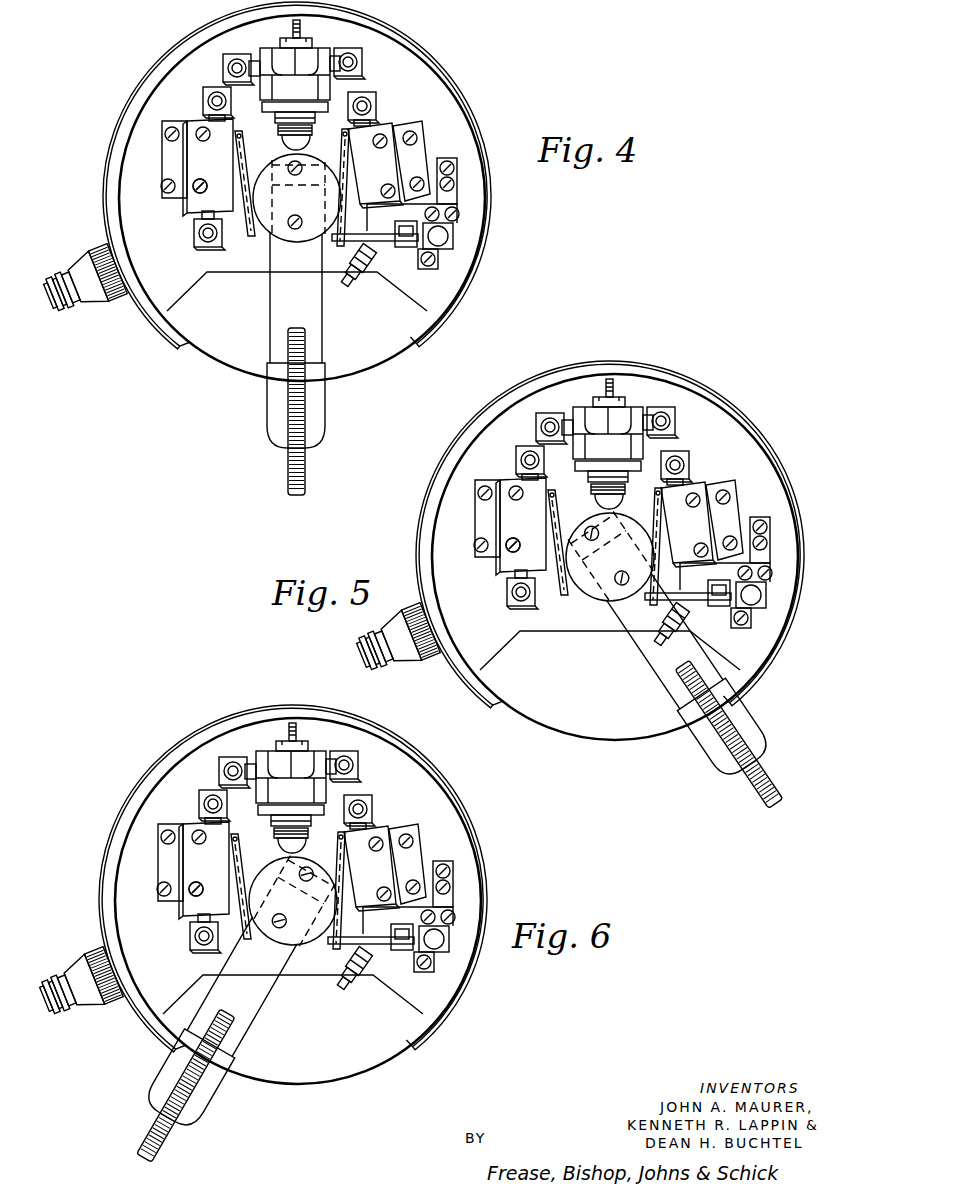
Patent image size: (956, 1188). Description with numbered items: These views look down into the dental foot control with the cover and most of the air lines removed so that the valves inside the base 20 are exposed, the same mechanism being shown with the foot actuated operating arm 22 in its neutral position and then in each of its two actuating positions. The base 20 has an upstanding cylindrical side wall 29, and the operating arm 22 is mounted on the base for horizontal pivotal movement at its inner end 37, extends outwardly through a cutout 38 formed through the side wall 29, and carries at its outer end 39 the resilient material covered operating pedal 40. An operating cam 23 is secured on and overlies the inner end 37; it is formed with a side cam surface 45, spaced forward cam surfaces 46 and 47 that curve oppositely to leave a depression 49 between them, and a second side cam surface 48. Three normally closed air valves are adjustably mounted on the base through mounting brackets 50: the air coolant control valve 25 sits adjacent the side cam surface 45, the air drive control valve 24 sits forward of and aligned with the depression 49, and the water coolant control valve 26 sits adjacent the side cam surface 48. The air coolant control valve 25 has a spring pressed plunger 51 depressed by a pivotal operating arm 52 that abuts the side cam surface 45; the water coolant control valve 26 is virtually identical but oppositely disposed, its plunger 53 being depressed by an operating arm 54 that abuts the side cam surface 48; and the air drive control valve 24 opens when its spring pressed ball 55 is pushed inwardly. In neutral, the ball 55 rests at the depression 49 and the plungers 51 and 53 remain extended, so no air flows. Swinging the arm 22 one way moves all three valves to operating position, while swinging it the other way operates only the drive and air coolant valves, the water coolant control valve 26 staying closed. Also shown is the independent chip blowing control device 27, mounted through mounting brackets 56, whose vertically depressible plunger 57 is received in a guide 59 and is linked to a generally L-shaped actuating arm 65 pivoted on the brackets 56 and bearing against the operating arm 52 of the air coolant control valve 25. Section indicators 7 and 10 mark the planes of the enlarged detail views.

In FIG. 4, the section line 7- 7 is at (160, 252).
In FIG. 4, the section line 10- 10 is at (280, 10).
In FIG. 4, the base 20 is at (108, 118).
In FIG. 5, the base 20 is at (727, 392).
In FIG. 6, the base 20 is at (150, 762).
In FIG. 4, the operating arm 22 is at (268, 350).
In FIG. 5, the operating arm 22 is at (657, 700).
In FIG. 6, the operating arm 22 is at (265, 1012).
In FIG. 4, the operating cam 23 is at (262, 230).
In FIG. 5, the operating cam 23 is at (588, 600).
In FIG. 6, the operating cam 23 is at (303, 950).
In FIG. 4, the air drive control valve 24 is at (262, 50).
In FIG. 5, the air drive control valve 24 is at (640, 400).
In FIG. 6, the air drive control valve 24 is at (262, 752).
In FIG. 4, the air coolant control valve 25 is at (390, 122).
In FIG. 5, the air coolant control valve 25 is at (700, 475).
In FIG. 6, the air coolant control valve 25 is at (385, 822).
In FIG. 4, the water coolant control valve 26 is at (195, 118).
In FIG. 5, the water coolant control valve 26 is at (507, 470).
In FIG. 6, the water coolant control valve 26 is at (185, 815).
In FIG. 4, the chip blowing control device 27 is at (460, 233).
In FIG. 5, the chip blowing control device 27 is at (770, 590).
In FIG. 6, the chip blowing control device 27 is at (455, 935).
In FIG. 4, the side wall 29 is at (383, 52).
In FIG. 5, the side wall 29 is at (423, 516).
In FIG. 6, the side wall 29 is at (105, 895).
In FIG. 4, the inner end 37 is at (328, 242).
In FIG. 5, the inner end 37 is at (618, 610).
In FIG. 6, the inner end 37 is at (250, 963).
In FIG. 4, the cutout 38 is at (185, 340).
In FIG. 5, the cutout 38 is at (500, 690).
In FIG. 6, the cutout 38 is at (398, 1042).
In FIG. 4, the outer end 39 is at (325, 365).
In FIG. 5, the outer end 39 is at (650, 675).
In FIG. 6, the outer end 39 is at (232, 1048).
In FIG. 4, the operating pedal 40 is at (288, 473).
In FIG. 5, the operating pedal 40 is at (745, 790).
In FIG. 6, the operating pedal 40 is at (152, 1130).
In FIG. 4, the side cam surface 45 is at (340, 160).
In FIG. 5, the side cam surface 45 is at (689, 525).
In FIG. 6, the side cam surface 45 is at (315, 938).
In FIG. 4, the forward cam surface 46 is at (318, 152).
In FIG. 5, the forward cam surface 46 is at (592, 508).
In FIG. 6, the forward cam surface 46 is at (343, 865).
In FIG. 4, the forward cam surface 47 is at (252, 177).
In FIG. 5, the forward cam surface 47 is at (560, 521).
In FIG. 6, the forward cam surface 47 is at (303, 852).
In FIG. 4, the side cam surface 48 is at (248, 166).
In FIG. 5, the side cam surface 48 is at (582, 590).
In FIG. 6, the side cam surface 48 is at (235, 862).
In FIG. 4, the depression 49 is at (298, 199).
In FIG. 5, the depression 49 is at (612, 557).
In FIG. 6, the depression 49 is at (293, 903).
In FIG. 4, the mounting brackets 50 is at (168, 166).
In FIG. 5, the mounting brackets 50 is at (478, 498).
In FIG. 6, the mounting brackets 50 is at (158, 848).
In FIG. 4, the plunger 51 is at (348, 192).
In FIG. 5, the plunger 51 is at (670, 542).
In FIG. 6, the plunger 51 is at (355, 887).
In FIG. 4, the operating arm 52 is at (345, 207).
In FIG. 5, the operating arm 52 is at (655, 565).
In FIG. 6, the operating arm 52 is at (308, 922).
In FIG. 4, the plunger 53 is at (240, 178).
In FIG. 5, the plunger 53 is at (542, 532).
In FIG. 6, the plunger 53 is at (228, 880).
In FIG. 4, the operating arm 54 is at (262, 237).
In FIG. 5, the operating arm 54 is at (530, 598).
In FIG. 6, the operating arm 54 is at (218, 940).
In FIG. 4, the ball 55 is at (297, 150).
In FIG. 5, the ball 55 is at (614, 510).
In FIG. 6, the ball 55 is at (291, 851).
In FIG. 4, the mounting brackets 56 is at (452, 186).
In FIG. 5, the mounting brackets 56 is at (772, 568).
In FIG. 6, the mounting brackets 56 is at (455, 887).
In FIG. 4, the plunger 57 is at (437, 245).
In FIG. 5, the plunger 57 is at (750, 612).
In FIG. 6, the plunger 57 is at (435, 945).
In FIG. 4, the guide 59 is at (445, 243).
In FIG. 5, the guide 59 is at (768, 594).
In FIG. 6, the guide 59 is at (450, 911).
In FIG. 4, the actuating arm 65 is at (385, 252).
In FIG. 5, the actuating arm 65 is at (660, 598).
In FIG. 6, the actuating arm 65 is at (372, 952).